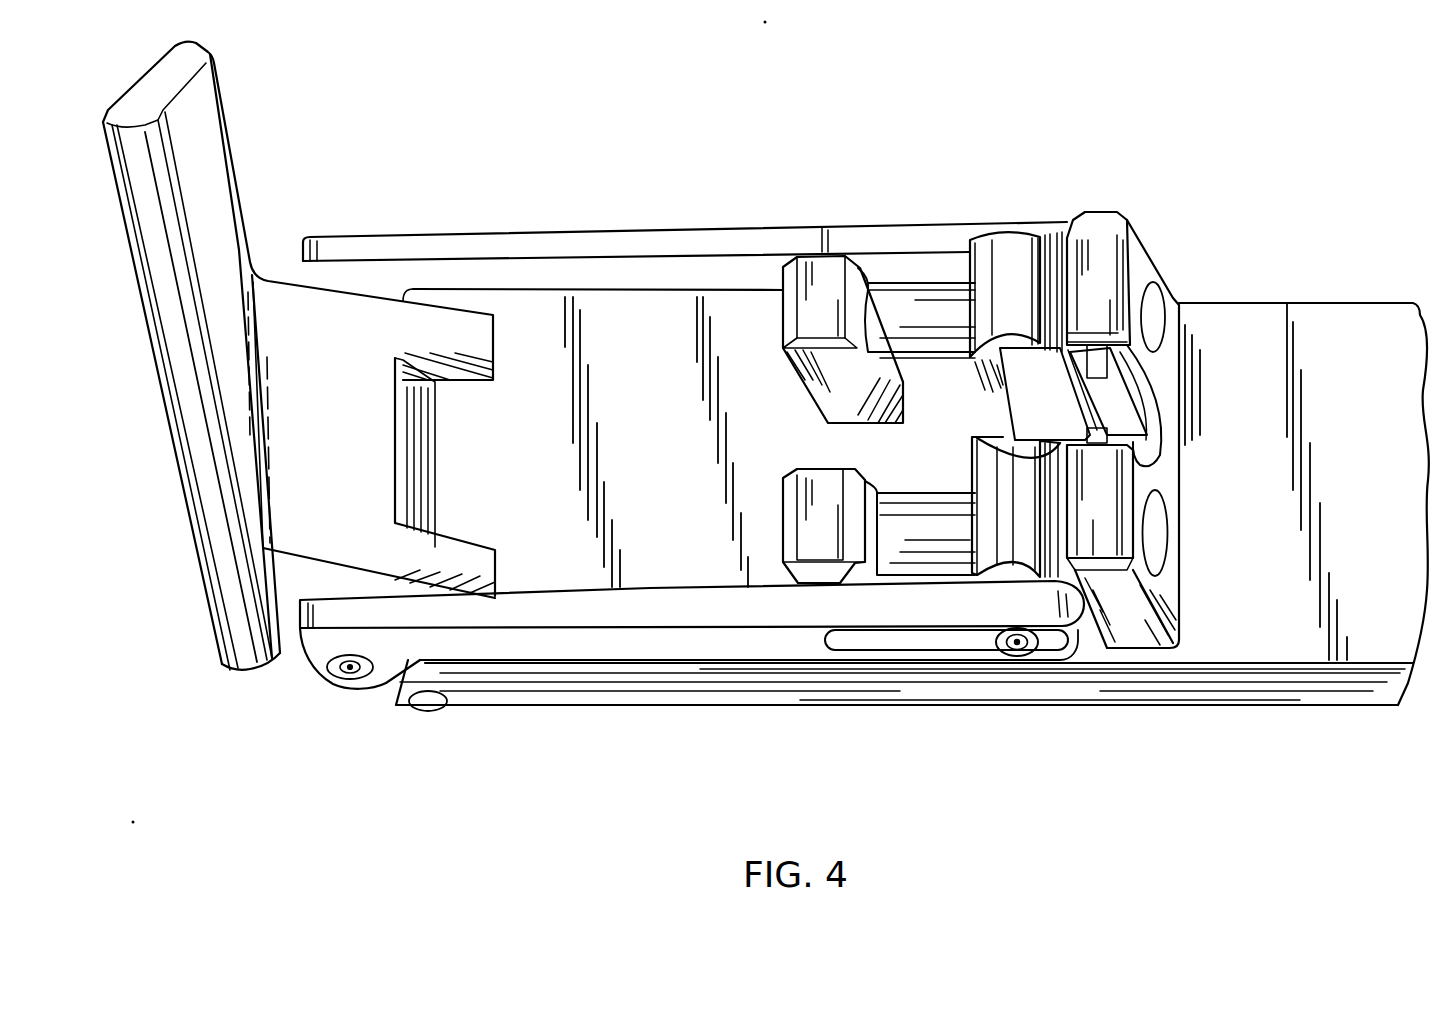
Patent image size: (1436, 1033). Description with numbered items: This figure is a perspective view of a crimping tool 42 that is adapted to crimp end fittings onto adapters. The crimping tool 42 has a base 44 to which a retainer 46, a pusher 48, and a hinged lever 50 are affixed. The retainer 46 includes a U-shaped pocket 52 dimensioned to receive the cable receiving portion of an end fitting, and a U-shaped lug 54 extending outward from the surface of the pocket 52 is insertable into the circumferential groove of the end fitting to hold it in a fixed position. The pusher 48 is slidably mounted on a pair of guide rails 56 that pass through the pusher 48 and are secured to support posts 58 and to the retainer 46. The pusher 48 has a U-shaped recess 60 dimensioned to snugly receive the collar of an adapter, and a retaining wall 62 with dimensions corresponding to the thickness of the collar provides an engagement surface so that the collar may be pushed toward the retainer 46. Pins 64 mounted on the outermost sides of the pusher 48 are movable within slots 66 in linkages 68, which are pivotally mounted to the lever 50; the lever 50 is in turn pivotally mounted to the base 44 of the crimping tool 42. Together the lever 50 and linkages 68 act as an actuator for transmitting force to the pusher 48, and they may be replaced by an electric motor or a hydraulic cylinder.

The crimping tool 42 is at (1052, 150).
The base 44 is at (1200, 653).
The retainer 46 is at (1122, 262).
The pusher 48 is at (1007, 255).
The hinged lever 50 is at (212, 197).
The pocket 52 is at (1160, 430).
The lug 54 is at (1138, 393).
The guide rails 56 is at (923, 303).
The support posts 58 is at (820, 273).
The recess 60 is at (1040, 250).
The retaining wall 62 is at (1040, 245).
The pins 64 is at (1013, 700).
The slots 66 is at (905, 653).
The linkages 68 is at (590, 230).